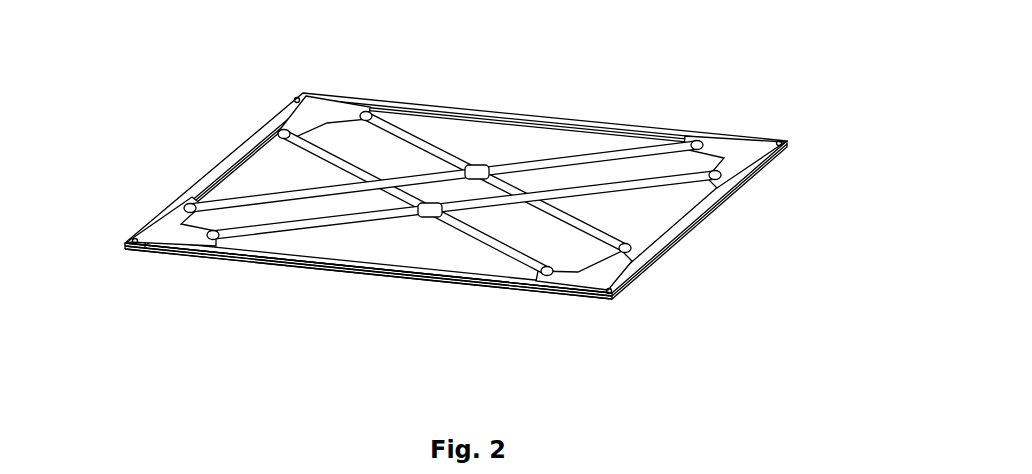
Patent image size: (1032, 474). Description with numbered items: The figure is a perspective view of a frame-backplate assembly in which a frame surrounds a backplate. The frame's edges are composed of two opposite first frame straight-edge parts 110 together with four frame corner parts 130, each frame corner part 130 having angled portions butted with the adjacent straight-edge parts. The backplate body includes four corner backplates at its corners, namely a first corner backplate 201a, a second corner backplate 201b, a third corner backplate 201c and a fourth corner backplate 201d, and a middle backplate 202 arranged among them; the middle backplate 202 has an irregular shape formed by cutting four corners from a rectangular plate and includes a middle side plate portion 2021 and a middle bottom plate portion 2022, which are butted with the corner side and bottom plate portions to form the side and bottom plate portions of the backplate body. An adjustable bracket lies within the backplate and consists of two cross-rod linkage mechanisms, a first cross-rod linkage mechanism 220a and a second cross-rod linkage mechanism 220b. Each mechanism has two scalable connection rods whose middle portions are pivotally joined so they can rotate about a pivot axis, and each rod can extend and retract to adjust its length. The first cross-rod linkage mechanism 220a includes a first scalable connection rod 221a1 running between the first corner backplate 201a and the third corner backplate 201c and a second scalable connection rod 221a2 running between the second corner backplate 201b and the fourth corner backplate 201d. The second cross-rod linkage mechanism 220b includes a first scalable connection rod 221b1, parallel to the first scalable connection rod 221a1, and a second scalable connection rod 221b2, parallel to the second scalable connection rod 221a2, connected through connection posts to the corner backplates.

The first frame straight-edge part 110 is at (500, 117).
The frame corner part 130 is at (292, 103).
The first corner backplate 201a is at (358, 108).
The second corner backplate 201b is at (727, 155).
The third corner backplate 201c is at (573, 276).
The fourth corner backplate 201d is at (177, 230).
The middle backplate 202 is at (303, 360).
The middle side plate portion 2021 is at (255, 252).
The middle bottom plate portion 2022 is at (327, 250).
The first cross-rod linkage mechanism 220a is at (436, 216).
The second cross-rod linkage mechanism 220b is at (479, 172).
The first scalable connection rod 221a1 is at (505, 249).
The second scalable connection rod 221a2 is at (640, 182).
The first scalable connection rod 221b1 is at (587, 228).
The second scalable connection rod 221b2 is at (610, 157).